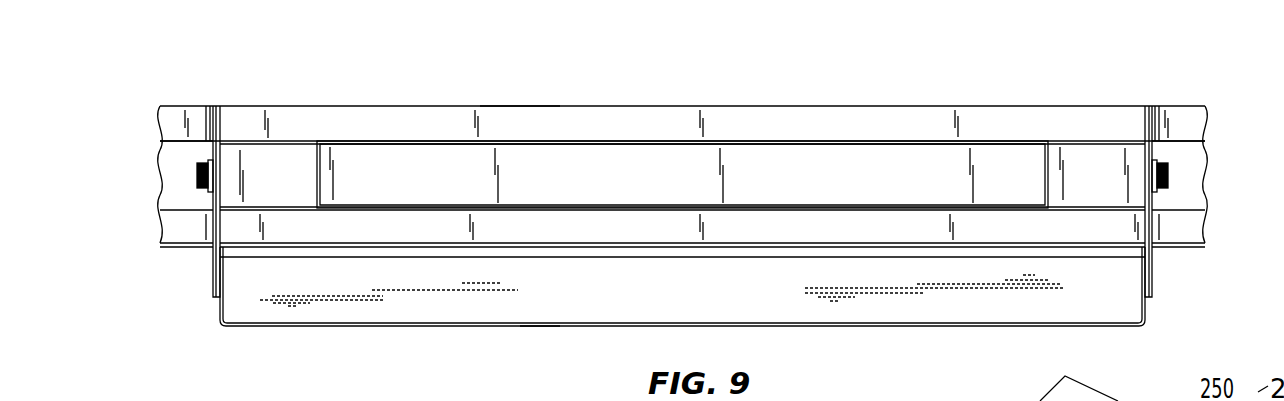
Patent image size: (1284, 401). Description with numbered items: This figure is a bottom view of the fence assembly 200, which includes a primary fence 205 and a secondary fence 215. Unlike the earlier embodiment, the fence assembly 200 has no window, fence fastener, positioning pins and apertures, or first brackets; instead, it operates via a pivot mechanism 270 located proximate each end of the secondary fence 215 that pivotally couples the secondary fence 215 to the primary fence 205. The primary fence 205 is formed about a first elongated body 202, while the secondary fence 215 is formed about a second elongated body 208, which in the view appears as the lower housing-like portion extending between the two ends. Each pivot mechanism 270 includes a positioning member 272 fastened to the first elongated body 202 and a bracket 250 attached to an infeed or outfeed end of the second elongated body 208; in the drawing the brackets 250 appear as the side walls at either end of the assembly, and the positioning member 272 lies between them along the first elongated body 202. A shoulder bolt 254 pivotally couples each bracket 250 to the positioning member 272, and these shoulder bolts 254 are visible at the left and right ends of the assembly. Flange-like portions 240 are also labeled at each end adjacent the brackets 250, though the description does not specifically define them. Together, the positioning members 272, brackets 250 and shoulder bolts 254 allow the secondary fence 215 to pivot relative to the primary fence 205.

The fence assembly 200 is at (686, 212).
The first elongated body 202 is at (620, 106).
The primary fence 205 is at (515, 100).
The second elongated body 208 is at (421, 327).
The secondary fence 215 is at (534, 338).
The flange 240 is at (219, 107).
The bracket 250 is at (214, 278).
The shoulder bolt 254 is at (196, 178).
The pivot mechanism 270 is at (176, 293).
The positioning member 272 is at (287, 165).